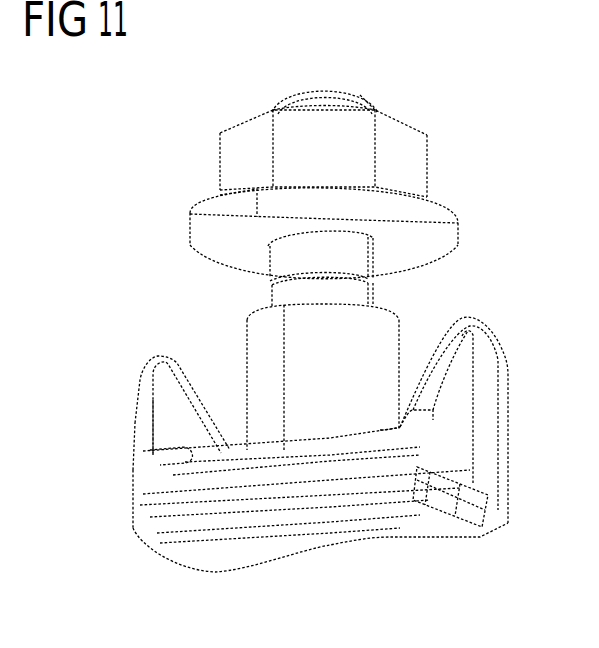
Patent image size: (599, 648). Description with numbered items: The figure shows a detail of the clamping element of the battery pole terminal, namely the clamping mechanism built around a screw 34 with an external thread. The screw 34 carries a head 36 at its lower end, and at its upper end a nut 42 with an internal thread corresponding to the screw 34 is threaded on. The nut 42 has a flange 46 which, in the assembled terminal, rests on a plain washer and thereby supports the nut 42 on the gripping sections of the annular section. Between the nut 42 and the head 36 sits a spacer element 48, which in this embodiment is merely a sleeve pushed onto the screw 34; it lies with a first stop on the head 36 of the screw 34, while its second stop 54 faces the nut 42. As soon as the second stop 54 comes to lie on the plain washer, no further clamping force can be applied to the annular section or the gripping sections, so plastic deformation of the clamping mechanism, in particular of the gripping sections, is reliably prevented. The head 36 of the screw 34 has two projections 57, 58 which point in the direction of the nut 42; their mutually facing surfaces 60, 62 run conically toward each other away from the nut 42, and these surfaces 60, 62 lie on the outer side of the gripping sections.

The screw 34 is at (318, 470).
The head 36 is at (277, 503).
The nut 42 is at (403, 156).
The flange 46 is at (440, 221).
The spacer element 48 is at (368, 345).
The second stop 54 is at (380, 311).
The projection 57 is at (182, 418).
The projection 58 is at (487, 459).
The surface 60 is at (172, 392).
The surface 62 is at (423, 388).